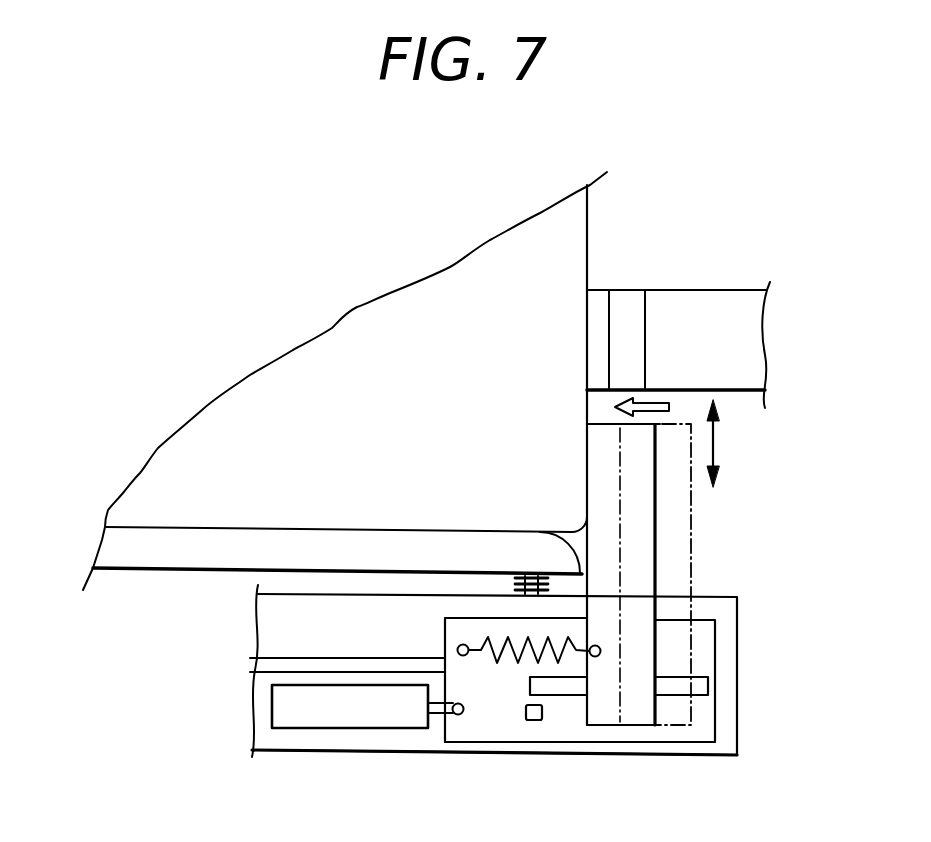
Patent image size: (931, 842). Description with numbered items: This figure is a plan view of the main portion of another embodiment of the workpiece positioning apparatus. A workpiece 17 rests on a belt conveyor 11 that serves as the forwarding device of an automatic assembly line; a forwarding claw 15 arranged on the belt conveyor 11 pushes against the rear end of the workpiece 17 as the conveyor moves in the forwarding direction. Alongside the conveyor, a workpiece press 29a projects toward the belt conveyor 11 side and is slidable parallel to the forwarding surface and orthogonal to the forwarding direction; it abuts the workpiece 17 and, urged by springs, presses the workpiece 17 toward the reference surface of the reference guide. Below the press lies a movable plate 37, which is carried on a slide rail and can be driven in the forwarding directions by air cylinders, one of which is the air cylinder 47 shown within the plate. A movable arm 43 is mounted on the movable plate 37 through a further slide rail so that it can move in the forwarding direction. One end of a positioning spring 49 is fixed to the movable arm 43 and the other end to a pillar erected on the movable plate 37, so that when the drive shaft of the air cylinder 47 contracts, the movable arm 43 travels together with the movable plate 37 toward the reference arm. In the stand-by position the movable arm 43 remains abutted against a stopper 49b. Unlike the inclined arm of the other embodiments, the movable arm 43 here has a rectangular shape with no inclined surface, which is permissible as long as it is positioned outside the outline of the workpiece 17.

The belt conveyor 11 is at (702, 310).
The forwarding claw 15 is at (625, 302).
The workpiece 17 is at (367, 320).
The workpiece press 29a is at (478, 547).
The movable plate 37 is at (467, 728).
The movable arm 43 is at (645, 523).
The air cylinder 47 is at (331, 697).
The positioning spring 49 is at (510, 662).
The stopper 49b is at (532, 722).